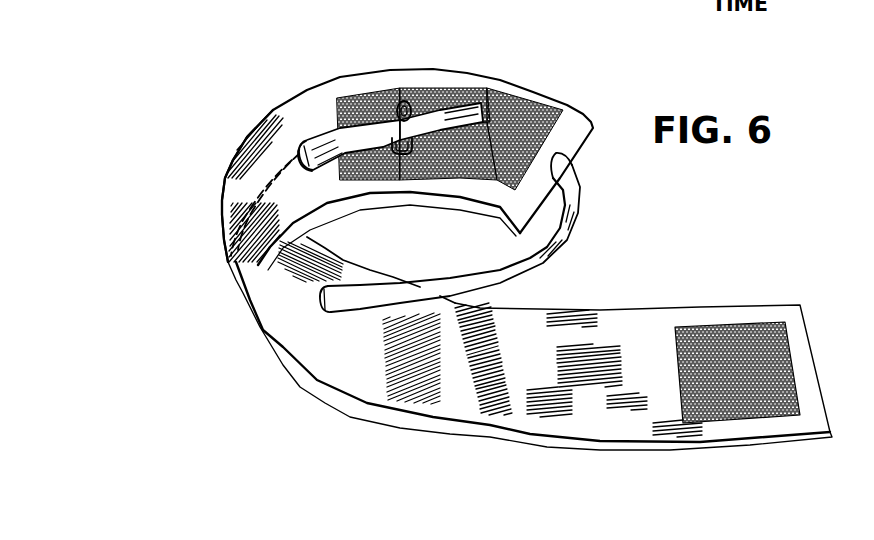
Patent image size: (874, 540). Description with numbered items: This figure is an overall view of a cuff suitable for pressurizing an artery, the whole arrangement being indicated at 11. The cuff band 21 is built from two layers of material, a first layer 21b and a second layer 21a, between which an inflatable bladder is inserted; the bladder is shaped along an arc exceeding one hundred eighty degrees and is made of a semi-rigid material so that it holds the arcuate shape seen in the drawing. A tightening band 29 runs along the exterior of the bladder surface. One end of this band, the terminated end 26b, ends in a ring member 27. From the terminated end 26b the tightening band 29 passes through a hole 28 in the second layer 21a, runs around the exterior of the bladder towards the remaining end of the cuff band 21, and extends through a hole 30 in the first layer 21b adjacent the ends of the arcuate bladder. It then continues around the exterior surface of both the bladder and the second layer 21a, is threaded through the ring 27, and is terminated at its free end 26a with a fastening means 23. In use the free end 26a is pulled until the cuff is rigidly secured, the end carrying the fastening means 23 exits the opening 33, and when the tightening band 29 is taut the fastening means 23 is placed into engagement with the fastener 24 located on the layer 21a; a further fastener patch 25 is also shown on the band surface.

The wrist band timing device 11 is at (229, 164).
The cuff band 21 is at (598, 350).
The second layer 21a is at (238, 192).
The first layer 21b is at (520, 413).
The fastening means 23 is at (507, 120).
The fastener 24 is at (472, 168).
The fastener patch 25 is at (743, 330).
The free end 26a is at (457, 117).
The terminated end 26b is at (377, 120).
The ring member 27 is at (400, 100).
The hole 28 is at (297, 148).
The tightening band 29 is at (580, 212).
The hole 30 is at (330, 320).
The opening 33 is at (407, 170).